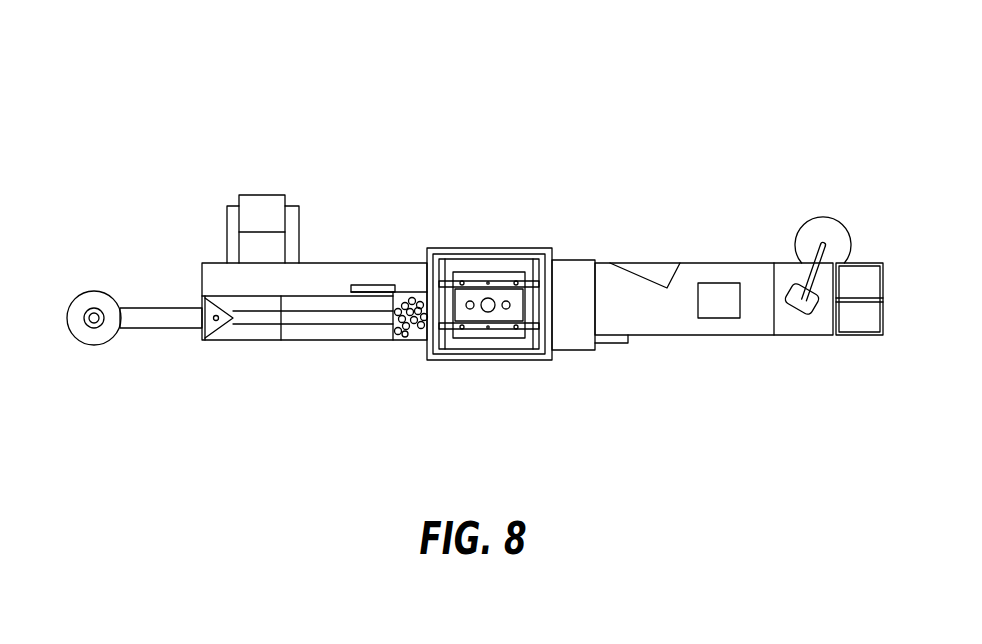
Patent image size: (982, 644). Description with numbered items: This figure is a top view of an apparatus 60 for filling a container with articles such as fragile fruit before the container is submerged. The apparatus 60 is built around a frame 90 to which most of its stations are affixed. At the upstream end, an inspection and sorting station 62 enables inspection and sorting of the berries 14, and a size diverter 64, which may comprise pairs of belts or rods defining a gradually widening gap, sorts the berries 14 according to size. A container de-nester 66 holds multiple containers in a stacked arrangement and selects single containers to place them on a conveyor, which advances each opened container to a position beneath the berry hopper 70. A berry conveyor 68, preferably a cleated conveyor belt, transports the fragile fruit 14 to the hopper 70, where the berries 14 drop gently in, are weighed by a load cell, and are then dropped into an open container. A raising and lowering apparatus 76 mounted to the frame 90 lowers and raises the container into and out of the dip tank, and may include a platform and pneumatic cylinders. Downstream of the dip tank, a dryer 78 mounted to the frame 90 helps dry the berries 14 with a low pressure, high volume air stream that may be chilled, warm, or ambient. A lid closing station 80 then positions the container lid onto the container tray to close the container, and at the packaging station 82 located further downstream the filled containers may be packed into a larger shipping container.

The apparatus 60 is at (344, 80).
The inspection and sorting station 62 is at (92, 345).
The size diverter 64 is at (242, 333).
The container de-nester 66 is at (262, 195).
The berry conveyor 68 is at (320, 318).
The berry hopper 70 is at (410, 291).
The berries 14 is at (393, 341).
The frame 90 is at (488, 248).
The raising and lowering apparatus 76 is at (473, 318).
The dryer 78 is at (575, 258).
The lid closing station 80 is at (660, 270).
The packaging station 82 is at (790, 203).